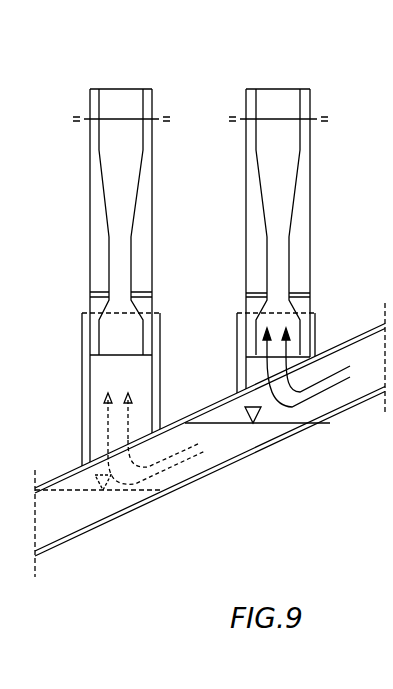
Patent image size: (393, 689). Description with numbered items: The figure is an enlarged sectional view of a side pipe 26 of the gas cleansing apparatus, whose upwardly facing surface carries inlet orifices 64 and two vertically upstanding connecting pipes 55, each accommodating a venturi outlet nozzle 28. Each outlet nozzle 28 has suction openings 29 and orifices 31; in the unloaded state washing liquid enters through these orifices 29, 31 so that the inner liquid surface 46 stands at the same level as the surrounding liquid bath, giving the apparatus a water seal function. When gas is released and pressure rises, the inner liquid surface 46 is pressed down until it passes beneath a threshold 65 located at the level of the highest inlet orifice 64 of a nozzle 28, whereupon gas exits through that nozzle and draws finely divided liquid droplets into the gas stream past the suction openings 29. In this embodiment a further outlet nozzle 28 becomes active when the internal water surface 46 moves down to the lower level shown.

The side pipe 26 is at (228, 461).
The outlet nozzle 28 is at (230, 198).
The suction opening 29 is at (246, 292).
The orifice 31 is at (124, 108).
The inner liquid surface 46 is at (80, 490).
The connecting pipe 55 is at (82, 337).
The inlet orifice 64 is at (123, 435).
The threshold 65 is at (153, 437).